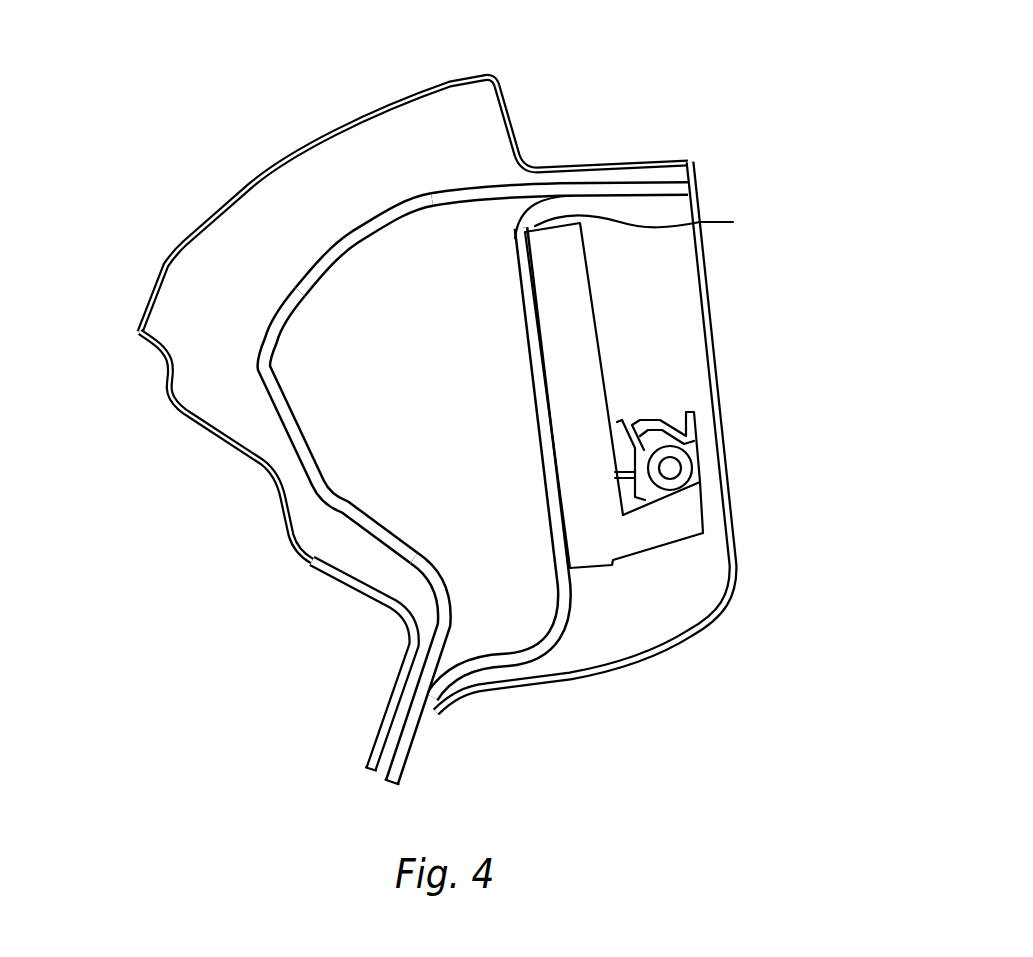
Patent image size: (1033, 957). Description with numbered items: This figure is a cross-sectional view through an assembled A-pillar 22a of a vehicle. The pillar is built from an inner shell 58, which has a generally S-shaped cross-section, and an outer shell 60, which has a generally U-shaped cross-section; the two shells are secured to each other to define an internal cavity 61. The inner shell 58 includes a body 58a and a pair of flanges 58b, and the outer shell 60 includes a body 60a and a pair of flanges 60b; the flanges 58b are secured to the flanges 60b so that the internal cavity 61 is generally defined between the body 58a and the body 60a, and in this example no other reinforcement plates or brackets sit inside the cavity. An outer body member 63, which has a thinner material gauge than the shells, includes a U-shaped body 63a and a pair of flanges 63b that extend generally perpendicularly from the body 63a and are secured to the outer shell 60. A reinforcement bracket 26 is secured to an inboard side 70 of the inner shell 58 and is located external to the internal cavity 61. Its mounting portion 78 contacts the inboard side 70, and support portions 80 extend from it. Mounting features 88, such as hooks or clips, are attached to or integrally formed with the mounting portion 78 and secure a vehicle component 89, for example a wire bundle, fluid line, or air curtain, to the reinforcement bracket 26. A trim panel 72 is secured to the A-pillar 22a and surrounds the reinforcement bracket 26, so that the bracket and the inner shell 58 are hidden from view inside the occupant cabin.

The A-pillar 22a is at (404, 602).
The reinforcement bracket 26 is at (628, 389).
The inner shell 58 is at (535, 667).
The body of inner shell 58a is at (525, 290).
The flanges of inner shell 58b is at (687, 183).
The outer shell 60 is at (274, 406).
The body of outer shell 60a is at (327, 253).
The flanges of outer shell 60b is at (645, 173).
The internal cavity 61 is at (382, 478).
The outer body member 63 is at (134, 333).
The U-shaped body of outer body member 63a is at (352, 118).
The flanges of outer body member 63b is at (693, 160).
The inboard side of inner shell 70 is at (650, 221).
The trim panel 72 is at (651, 662).
The mounting portion 78 is at (570, 334).
The support portions 80 is at (660, 537).
The mounting features 88 is at (708, 427).
The vehicle component 89 is at (681, 477).